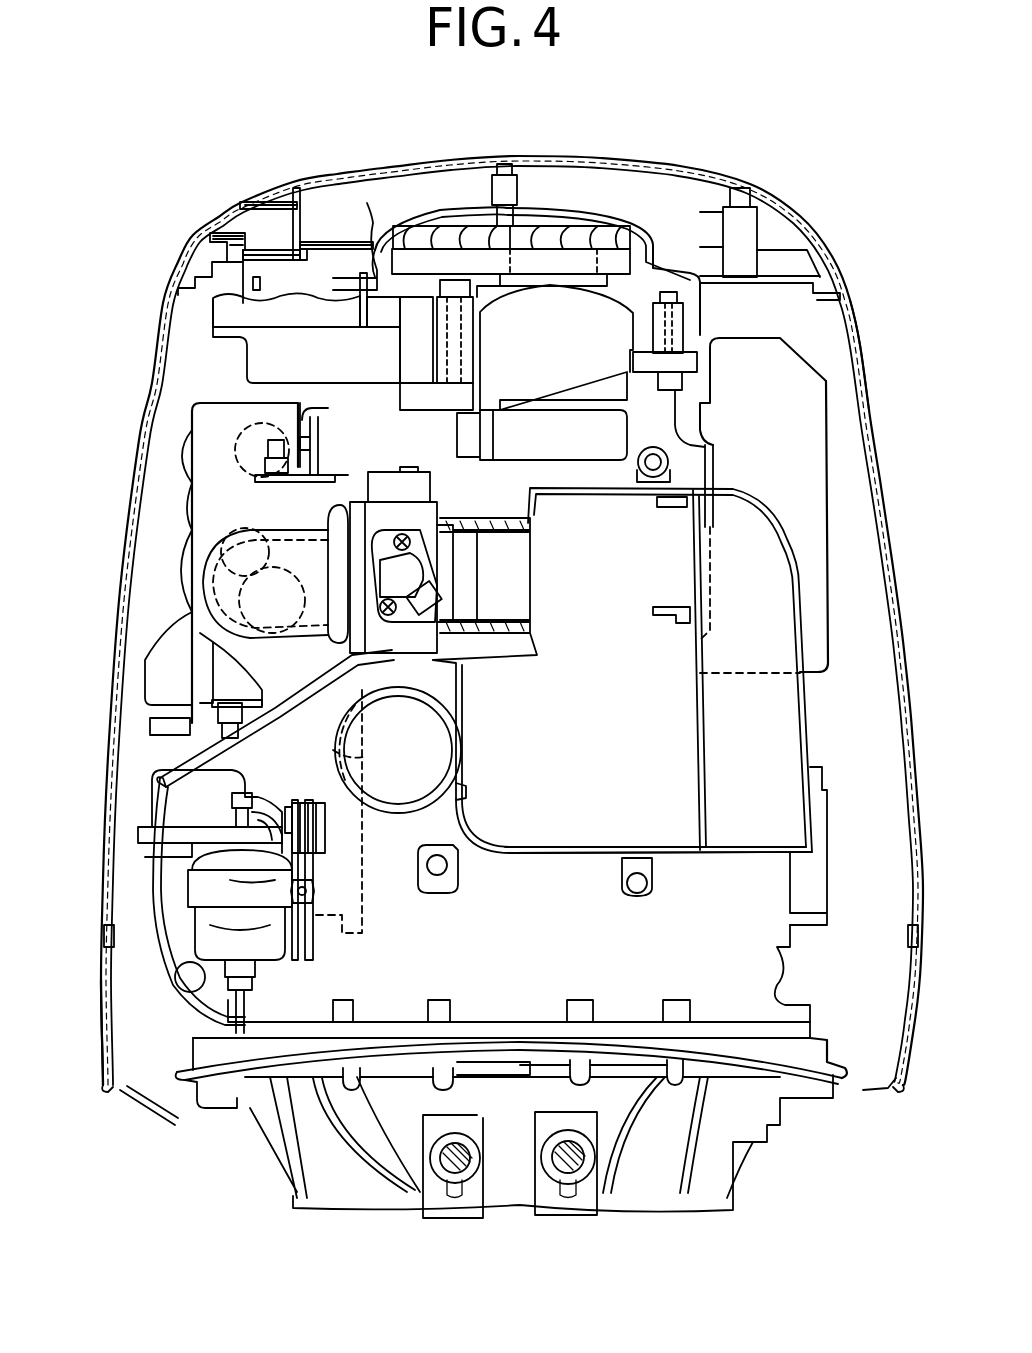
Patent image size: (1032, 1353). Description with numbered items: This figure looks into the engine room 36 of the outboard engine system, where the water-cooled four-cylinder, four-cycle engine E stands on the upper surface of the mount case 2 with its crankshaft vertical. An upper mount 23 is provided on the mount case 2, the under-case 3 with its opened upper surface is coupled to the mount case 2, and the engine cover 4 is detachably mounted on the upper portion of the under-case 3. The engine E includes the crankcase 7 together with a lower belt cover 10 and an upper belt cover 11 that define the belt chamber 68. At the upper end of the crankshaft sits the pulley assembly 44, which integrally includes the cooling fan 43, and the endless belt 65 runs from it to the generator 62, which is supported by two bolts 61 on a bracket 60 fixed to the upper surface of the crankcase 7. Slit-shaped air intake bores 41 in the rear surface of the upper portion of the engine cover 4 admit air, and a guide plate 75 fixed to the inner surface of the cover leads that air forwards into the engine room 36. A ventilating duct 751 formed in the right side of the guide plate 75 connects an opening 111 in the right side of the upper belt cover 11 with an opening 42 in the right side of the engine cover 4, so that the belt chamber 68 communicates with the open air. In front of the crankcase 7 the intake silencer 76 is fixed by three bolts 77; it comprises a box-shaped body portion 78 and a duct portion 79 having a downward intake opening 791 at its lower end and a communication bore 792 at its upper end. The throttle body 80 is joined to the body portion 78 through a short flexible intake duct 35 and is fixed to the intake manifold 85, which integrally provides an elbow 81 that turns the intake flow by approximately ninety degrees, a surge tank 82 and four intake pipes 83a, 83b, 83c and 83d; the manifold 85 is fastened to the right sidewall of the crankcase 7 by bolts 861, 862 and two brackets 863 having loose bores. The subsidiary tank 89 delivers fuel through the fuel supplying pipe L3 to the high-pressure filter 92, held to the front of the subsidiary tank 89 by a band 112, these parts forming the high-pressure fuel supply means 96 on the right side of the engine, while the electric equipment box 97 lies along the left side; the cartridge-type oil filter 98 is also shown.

The mount case 2 is at (207, 1108).
The under-case 3 is at (105, 980).
The engine cover 4 is at (126, 490).
The crankcase 7 is at (660, 424).
The lower belt cover 10 is at (247, 347).
The upper belt cover 11 is at (210, 313).
The opening 111 is at (243, 267).
The upper mount 23 is at (448, 1182).
The short intake duct 35 is at (484, 518).
The engine room 36 is at (883, 656).
The air intake bore 41 is at (783, 260).
The opening 42 is at (203, 232).
The cooling fan 43 is at (613, 236).
The pulley assembly 44 is at (552, 229).
The bracket 60 is at (425, 408).
The bolts 61 is at (455, 292).
The generator 62 is at (567, 382).
The endless belt 65 is at (550, 268).
The belt chamber 68 is at (348, 274).
The guide plate 75 is at (301, 229).
The ventilating duct 751 is at (295, 253).
The intake silencer 76 is at (588, 843).
The bolts 77 is at (650, 478).
The body portion 78 is at (533, 858).
The duct portion 79 is at (807, 722).
The intake opening 791 is at (733, 857).
The communication bore 792 is at (650, 617).
The throttle body 80 is at (392, 655).
The elbow 81 is at (143, 622).
The surge tank 82 is at (192, 505).
The intake pipe 83a is at (230, 443).
The intake pipe 83b is at (340, 560).
The intake pipe 83c is at (265, 583).
The intake pipe 83d is at (392, 817).
The intake manifold 85 is at (189, 532).
The bolts 861 is at (177, 725).
The bolts 862 is at (318, 440).
The brackets 863 is at (100, 716).
The subsidiary tank 89 is at (152, 880).
The high-pressure filter 92 is at (205, 930).
The high-pressure fuel supply means 96 is at (166, 755).
The electric equipment box 97 is at (830, 500).
The cartridge-type oil filter 98 is at (392, 817).
The band 112 is at (250, 890).
The engine E is at (863, 360).
The fuel supplying pipe L3 is at (172, 800).